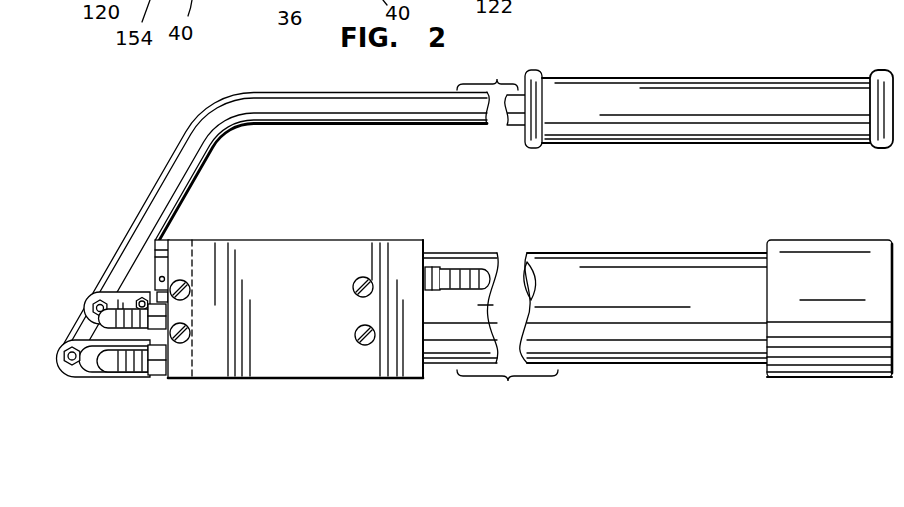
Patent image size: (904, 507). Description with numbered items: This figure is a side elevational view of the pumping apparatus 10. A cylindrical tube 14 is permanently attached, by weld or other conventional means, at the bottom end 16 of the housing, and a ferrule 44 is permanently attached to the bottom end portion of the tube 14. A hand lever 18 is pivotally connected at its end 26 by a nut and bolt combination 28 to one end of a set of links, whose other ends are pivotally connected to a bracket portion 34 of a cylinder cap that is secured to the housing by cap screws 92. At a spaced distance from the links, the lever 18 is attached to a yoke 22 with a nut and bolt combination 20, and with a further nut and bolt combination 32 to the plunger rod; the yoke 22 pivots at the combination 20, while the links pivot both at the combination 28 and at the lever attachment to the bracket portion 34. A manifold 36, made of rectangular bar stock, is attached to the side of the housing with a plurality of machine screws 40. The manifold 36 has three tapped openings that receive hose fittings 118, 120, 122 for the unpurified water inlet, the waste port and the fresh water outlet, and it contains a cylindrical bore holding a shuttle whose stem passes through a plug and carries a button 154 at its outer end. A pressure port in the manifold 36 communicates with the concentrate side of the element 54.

The pumping apparatus 10 is at (470, 393).
The cylindrical tube 14 is at (599, 250).
The bottom end 16 is at (428, 251).
The hand lever 18 is at (391, 121).
The nut and bolt combination 20 is at (93, 305).
The yoke 22 is at (92, 292).
The end 26 is at (53, 363).
The nut and bolt combination 28 is at (72, 376).
The nut and bolt combination 32 is at (137, 297).
The bracket portion 34 is at (145, 379).
The manifold 36 is at (294, 244).
The machine screws 40 is at (190, 291).
The ferrule 44 is at (804, 253).
The element 54 is at (35, 284).
The cap screws 92 is at (157, 243).
The hose fitting 118 is at (113, 376).
The hose fitting 120 is at (108, 327).
The hose fitting 122 is at (471, 268).
The button 154 is at (168, 266).